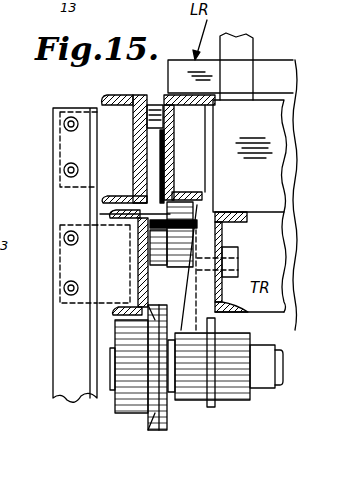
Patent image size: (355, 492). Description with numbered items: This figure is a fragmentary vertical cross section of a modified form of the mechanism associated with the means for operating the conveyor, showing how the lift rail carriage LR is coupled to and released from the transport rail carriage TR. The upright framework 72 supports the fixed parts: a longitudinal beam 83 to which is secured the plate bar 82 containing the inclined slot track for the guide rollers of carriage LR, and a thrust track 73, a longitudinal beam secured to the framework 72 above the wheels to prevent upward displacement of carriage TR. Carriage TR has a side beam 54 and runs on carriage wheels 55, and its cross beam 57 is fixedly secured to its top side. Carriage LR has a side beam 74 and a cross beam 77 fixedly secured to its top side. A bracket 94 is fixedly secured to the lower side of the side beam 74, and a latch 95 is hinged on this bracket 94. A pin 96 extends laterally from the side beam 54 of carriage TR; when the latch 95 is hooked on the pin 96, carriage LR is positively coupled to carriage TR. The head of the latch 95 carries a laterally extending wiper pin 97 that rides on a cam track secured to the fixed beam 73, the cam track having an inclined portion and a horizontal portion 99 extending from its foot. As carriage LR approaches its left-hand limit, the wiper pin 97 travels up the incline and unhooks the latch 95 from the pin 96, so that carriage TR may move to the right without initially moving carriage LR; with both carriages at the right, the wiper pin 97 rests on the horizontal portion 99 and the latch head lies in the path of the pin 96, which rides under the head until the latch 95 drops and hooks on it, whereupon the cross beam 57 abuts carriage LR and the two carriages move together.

The cross beam 77 is at (185, 72).
The cross beam 57 is at (250, 156).
The longitudinal beam 83 is at (108, 96).
The plate bar 82 is at (143, 95).
The side beam 74 is at (184, 197).
The upright framework 72 is at (57, 373).
The wiper pin 97 is at (105, 214).
The thrust track 73 is at (147, 290).
The horizontal portion of cam track 99 is at (143, 248).
The bracket 94 is at (178, 268).
The pin 96 is at (198, 306).
The latch 95 is at (223, 236).
The side beam 54 is at (250, 313).
The carriage wheel 55 is at (128, 415).